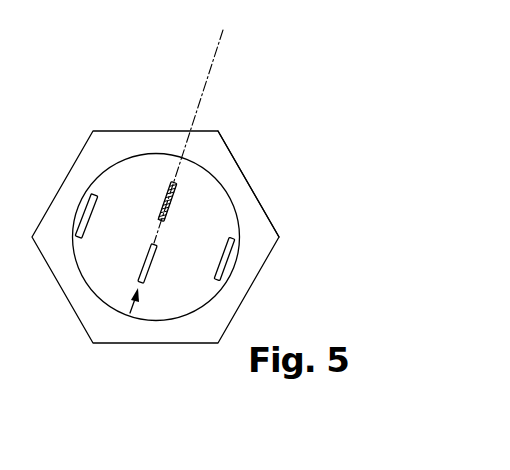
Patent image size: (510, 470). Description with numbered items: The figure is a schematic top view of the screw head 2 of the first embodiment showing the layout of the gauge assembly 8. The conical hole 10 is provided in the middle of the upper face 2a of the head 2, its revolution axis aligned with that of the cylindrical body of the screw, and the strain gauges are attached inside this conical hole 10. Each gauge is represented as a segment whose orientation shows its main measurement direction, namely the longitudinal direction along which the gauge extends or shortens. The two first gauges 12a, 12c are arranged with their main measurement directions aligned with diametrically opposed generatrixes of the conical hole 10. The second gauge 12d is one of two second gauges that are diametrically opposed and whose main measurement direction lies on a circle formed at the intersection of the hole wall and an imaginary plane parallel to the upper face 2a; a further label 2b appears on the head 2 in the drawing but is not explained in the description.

The head 2 is at (286, 255).
The upper face 2a is at (218, 158).
The side slot of housing 2b is at (84, 208).
The gauge assembly 8 is at (130, 313).
The conical hole 10 is at (138, 170).
The first strain gauge 12a is at (172, 204).
The first strain gauge 12c is at (150, 273).
The second strain gauge 12d is at (232, 252).